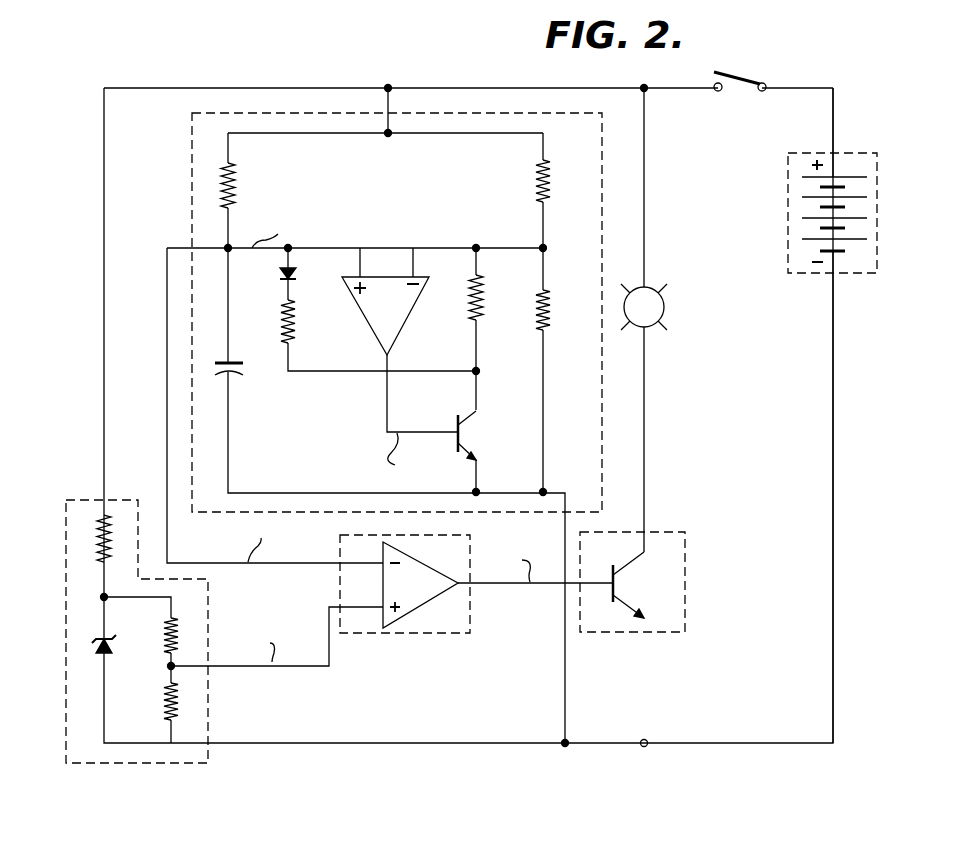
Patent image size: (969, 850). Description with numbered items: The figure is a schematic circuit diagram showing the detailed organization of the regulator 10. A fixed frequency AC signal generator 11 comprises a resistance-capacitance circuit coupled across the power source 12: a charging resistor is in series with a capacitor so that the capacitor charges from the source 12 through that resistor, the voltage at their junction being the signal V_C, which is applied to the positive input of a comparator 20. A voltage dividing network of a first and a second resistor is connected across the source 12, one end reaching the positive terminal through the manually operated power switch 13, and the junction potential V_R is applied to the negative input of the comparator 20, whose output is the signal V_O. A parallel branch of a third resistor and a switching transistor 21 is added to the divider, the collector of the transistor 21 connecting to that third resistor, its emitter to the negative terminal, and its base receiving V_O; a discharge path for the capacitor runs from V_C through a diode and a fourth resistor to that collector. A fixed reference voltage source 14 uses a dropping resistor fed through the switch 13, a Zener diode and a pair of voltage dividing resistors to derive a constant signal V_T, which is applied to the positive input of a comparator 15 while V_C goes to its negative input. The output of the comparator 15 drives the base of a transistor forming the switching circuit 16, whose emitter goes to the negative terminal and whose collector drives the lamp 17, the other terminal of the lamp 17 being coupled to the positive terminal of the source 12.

The regulator 10 is at (462, 88).
The fixed frequency AC signal generator 11 is at (233, 112).
The power source 12 is at (877, 264).
The manually operated power switch 13 is at (740, 72).
The fixed reference voltage source 14 is at (66, 763).
The comparator 15 is at (436, 633).
The switching circuit 16 is at (685, 617).
The lamp 17 is at (664, 307).
The comparator 20 is at (398, 328).
The transistor 21 is at (456, 420).